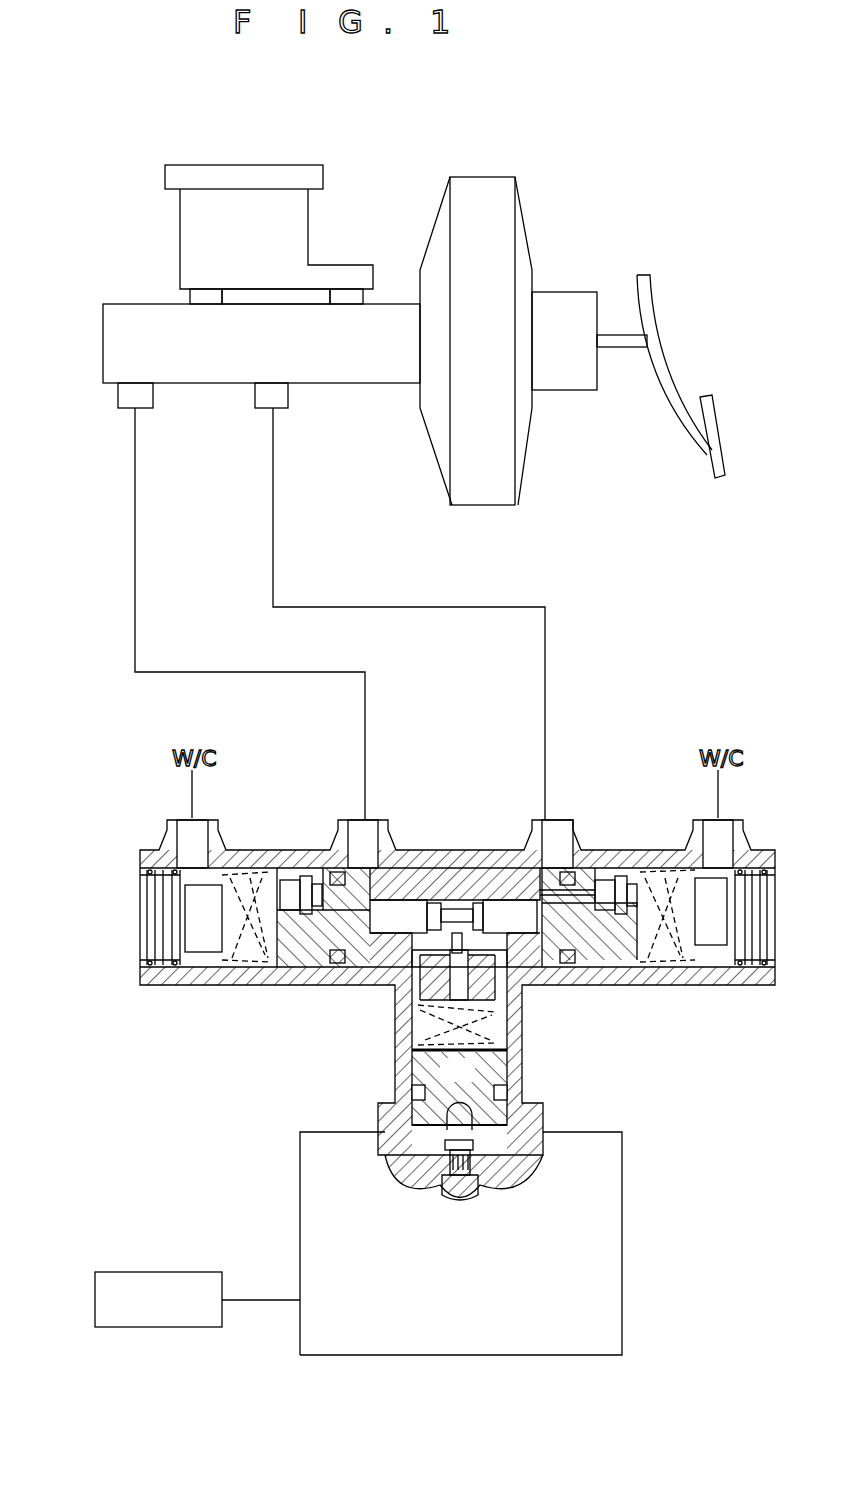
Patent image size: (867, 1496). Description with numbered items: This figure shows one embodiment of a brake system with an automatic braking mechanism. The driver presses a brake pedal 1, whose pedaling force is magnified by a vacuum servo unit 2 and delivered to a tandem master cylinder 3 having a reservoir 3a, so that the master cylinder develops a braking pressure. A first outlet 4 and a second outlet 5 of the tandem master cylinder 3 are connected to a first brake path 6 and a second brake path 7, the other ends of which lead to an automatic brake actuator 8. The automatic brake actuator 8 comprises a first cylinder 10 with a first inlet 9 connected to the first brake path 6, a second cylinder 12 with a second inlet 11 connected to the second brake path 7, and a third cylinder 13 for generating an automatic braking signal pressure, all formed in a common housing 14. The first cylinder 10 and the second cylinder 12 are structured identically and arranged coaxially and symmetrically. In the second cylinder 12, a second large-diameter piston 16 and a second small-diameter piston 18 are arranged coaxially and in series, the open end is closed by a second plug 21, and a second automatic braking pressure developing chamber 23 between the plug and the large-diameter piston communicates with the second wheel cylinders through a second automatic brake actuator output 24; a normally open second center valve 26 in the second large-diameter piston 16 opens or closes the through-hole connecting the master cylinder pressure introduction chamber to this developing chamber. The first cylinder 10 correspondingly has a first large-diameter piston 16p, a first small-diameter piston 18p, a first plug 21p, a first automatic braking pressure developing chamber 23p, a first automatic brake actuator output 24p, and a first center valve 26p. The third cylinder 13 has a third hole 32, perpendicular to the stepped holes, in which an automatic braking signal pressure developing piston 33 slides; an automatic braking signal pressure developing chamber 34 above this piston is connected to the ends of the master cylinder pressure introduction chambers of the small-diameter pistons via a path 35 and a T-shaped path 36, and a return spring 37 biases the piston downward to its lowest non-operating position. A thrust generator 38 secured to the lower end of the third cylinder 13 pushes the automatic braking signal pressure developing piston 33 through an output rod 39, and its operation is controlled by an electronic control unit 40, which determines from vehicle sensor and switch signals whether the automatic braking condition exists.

The brake pedal 1 is at (723, 463).
The vacuum servo unit 2 is at (510, 488).
The tandem master cylinder 3 is at (132, 322).
The reservoir 3a is at (290, 220).
The first outlet 4 is at (122, 398).
The second outlet 5 is at (262, 398).
The first brake path 6 is at (136, 535).
The second brake path 7 is at (273, 525).
The automatic brake actuator 8 is at (472, 785).
The first inlet 9 is at (363, 827).
The first cylinder 10 is at (232, 990).
The second inlet 11 is at (558, 825).
The second cylinder 12 is at (695, 990).
The third cylinder 13 is at (545, 1085).
The housing 14 is at (470, 870).
The second large-diameter piston 16 is at (625, 975).
The first large-diameter piston 16p is at (295, 985).
The second small-diameter piston 18 is at (523, 913).
The first small-diameter piston 18p is at (400, 913).
The second plug 21 is at (721, 907).
The first plug 21p is at (165, 927).
The second automatic braking pressure developing chamber 23 is at (676, 897).
The first automatic braking pressure developing chamber 23p is at (245, 895).
The second automatic brake actuator output 24 is at (730, 830).
The first automatic brake actuator output 24p is at (170, 830).
The second center valve 26 is at (600, 862).
The first center valve 26p is at (305, 868).
The third hole 32 is at (440, 1060).
The automatic braking signal pressure developing piston 33 is at (535, 1110).
The automatic braking signal pressure developing chamber 34 is at (478, 1015).
The path 35 is at (458, 968).
The T-shaped path 36 is at (458, 903).
The return spring 37 is at (490, 1040).
The thrust generator 38 is at (610, 1280).
The output rod 39 is at (480, 1140).
The electronic control unit 40 is at (150, 1270).